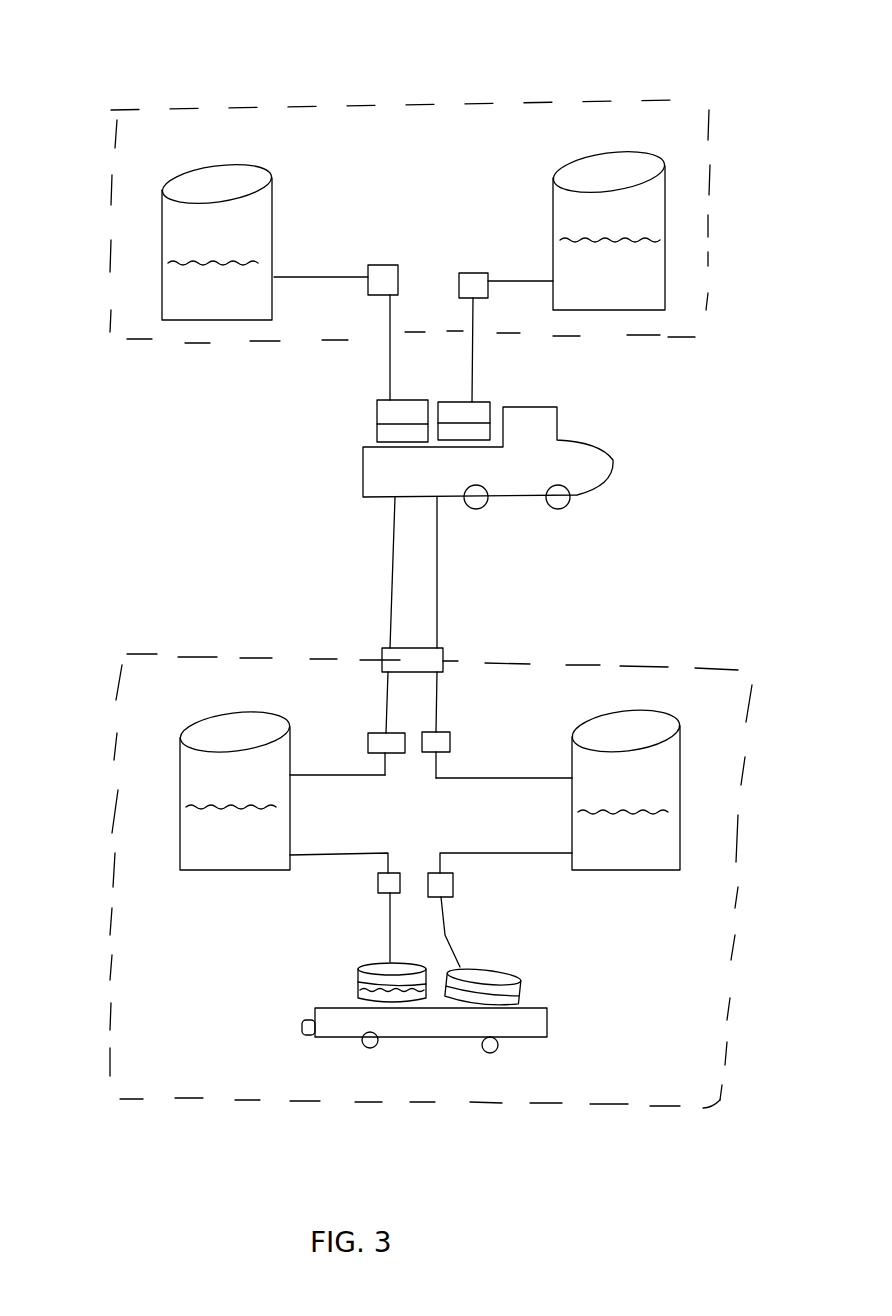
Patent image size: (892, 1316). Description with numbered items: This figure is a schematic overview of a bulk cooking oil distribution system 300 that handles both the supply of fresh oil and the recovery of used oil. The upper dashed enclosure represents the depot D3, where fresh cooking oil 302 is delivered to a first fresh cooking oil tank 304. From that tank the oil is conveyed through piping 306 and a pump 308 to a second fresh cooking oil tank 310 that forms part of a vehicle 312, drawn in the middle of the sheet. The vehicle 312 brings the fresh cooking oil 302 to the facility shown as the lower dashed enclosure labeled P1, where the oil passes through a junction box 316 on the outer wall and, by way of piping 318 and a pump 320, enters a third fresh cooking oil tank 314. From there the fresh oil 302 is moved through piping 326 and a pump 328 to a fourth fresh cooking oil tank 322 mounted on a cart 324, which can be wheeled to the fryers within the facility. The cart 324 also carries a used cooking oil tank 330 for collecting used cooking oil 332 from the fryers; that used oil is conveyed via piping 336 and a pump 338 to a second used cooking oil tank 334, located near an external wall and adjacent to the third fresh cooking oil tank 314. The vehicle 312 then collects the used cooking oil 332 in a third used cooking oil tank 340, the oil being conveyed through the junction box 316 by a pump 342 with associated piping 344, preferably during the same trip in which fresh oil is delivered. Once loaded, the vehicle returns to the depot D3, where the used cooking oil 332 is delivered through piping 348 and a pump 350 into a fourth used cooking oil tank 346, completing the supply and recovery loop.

The bulk cooking oil distribution system 300 is at (499, 66).
The fresh cooking oil 302 is at (182, 312).
The first fresh cooking oil tank 304 is at (270, 213).
The piping 306 is at (300, 274).
The pump 308 is at (385, 266).
The second fresh cooking oil tank 310 is at (383, 410).
The vehicle 312 is at (597, 462).
The third fresh cooking oil tank 314 is at (195, 765).
The junction box 316 is at (445, 651).
The piping 318 is at (333, 775).
The pump 320 is at (372, 737).
The fourth fresh cooking oil tank 322 is at (358, 972).
The cart 324 is at (540, 1021).
The piping 326 is at (361, 851).
The pump 328 is at (378, 880).
The used cooking oil tank 330 is at (505, 975).
The used cooking oil 332 is at (650, 283).
The second used cooking oil tank 334 is at (688, 760).
The piping 336 is at (513, 856).
The pump 338 is at (453, 887).
The third used cooking oil tank 340 is at (490, 401).
The pump 342 is at (452, 736).
The piping 344 is at (482, 778).
The fourth used cooking oil tank 346 is at (665, 205).
The piping 348 is at (470, 357).
The pump 350 is at (468, 273).
The depot D3 is at (710, 130).
The project site P1 is at (586, 665).